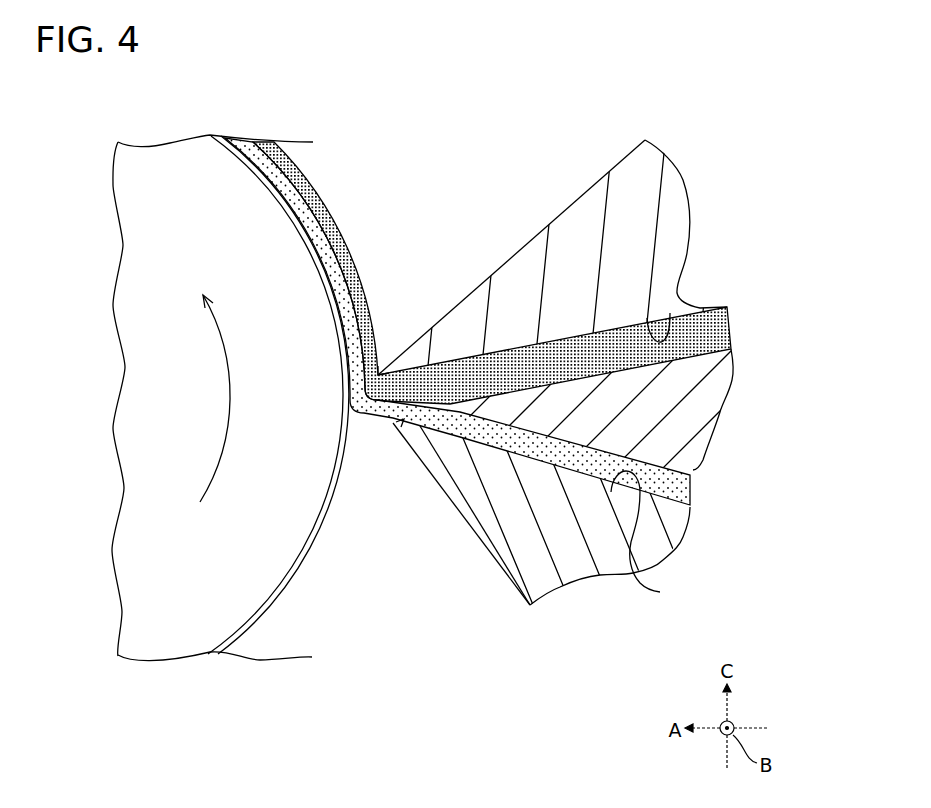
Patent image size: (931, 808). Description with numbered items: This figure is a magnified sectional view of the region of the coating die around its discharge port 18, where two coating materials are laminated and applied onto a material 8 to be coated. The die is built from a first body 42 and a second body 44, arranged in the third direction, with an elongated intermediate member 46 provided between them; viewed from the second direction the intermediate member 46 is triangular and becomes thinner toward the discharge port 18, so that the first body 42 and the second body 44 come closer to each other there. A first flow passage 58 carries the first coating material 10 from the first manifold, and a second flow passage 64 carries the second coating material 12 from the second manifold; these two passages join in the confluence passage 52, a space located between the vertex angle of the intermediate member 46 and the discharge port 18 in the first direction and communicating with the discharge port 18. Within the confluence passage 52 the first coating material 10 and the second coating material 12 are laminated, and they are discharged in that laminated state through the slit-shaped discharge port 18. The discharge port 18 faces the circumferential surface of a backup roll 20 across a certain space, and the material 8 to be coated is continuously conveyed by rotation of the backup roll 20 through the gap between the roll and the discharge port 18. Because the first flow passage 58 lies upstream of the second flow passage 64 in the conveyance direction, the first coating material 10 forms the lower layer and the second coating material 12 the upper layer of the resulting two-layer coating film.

The material to be coated 8 is at (244, 634).
The first coating material 10 is at (688, 487).
The second coating material 12 is at (727, 327).
The discharge port 18 is at (380, 374).
The backup roll 20 is at (190, 626).
The first body 42 is at (512, 577).
The second body 44 is at (600, 182).
The intermediate member 46 is at (707, 410).
The confluence passage 52 is at (403, 420).
The first flow passage 58 is at (660, 592).
The second flow passage 64 is at (687, 255).